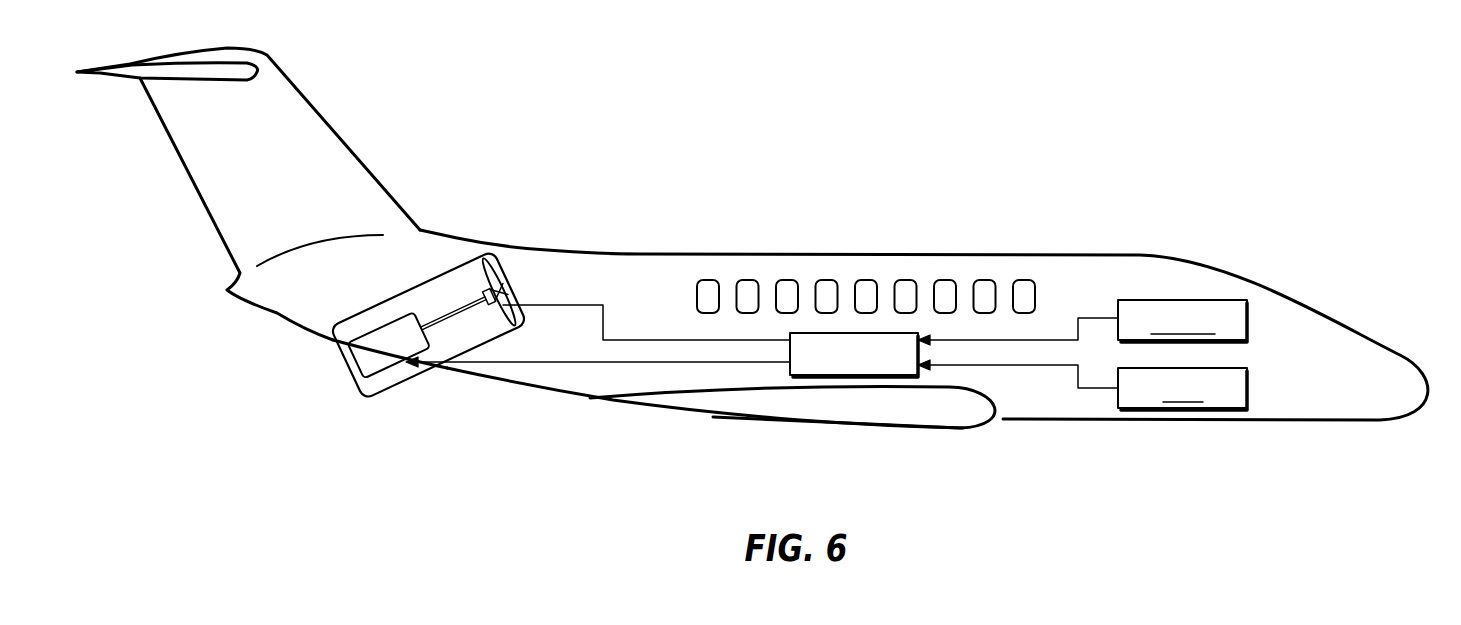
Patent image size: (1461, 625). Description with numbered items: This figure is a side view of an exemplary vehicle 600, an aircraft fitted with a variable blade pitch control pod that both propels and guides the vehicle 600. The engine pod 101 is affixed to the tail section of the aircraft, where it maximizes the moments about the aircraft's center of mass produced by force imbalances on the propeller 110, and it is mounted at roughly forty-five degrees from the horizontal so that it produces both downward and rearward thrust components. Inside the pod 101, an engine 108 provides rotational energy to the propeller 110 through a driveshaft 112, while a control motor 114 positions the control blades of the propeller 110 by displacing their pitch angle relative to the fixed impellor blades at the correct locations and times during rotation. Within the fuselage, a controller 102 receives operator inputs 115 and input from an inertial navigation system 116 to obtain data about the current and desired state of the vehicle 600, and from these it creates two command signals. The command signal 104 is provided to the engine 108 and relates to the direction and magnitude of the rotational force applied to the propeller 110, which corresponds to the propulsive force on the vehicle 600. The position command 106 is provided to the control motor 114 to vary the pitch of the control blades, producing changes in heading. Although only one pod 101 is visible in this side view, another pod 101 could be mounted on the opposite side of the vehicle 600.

The vehicle 600 is at (1074, 143).
The engine pod 101 is at (367, 402).
The controller 102 is at (870, 376).
The command signal 104 is at (543, 360).
The position command 106 is at (587, 303).
The engine 108 is at (337, 347).
The propeller 110 is at (507, 260).
The driveshaft 112 is at (440, 327).
The control motor 114 is at (483, 287).
The operator inputs 115 is at (1248, 313).
The inertial navigation system 116 is at (1248, 393).